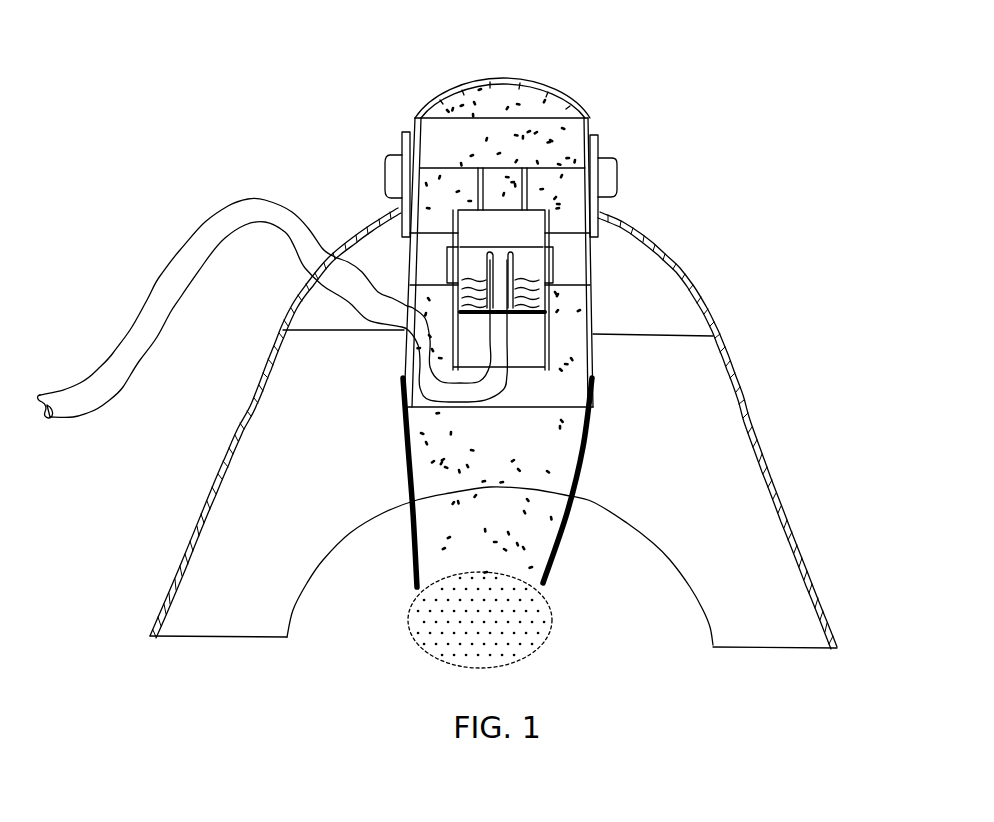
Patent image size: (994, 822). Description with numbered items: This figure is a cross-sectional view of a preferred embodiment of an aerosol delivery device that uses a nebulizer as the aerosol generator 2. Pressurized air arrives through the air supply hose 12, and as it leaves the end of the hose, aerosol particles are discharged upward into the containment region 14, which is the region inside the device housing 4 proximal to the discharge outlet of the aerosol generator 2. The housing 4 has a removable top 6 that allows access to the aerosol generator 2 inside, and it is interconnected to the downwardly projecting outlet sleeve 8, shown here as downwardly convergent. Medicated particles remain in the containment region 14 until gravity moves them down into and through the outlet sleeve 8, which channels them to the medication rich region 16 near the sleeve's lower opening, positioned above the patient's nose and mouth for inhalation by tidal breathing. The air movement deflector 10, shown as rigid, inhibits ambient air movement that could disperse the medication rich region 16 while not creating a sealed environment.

The aerosol generator 2 is at (547, 228).
The device housing 4 is at (407, 153).
The removable top 6 is at (530, 83).
The outlet sleeve 8 is at (590, 427).
The air movement deflector 10 is at (793, 527).
The air supply hose 12 is at (207, 230).
The containment region 14 is at (527, 140).
The medication rich region 16 is at (537, 653).